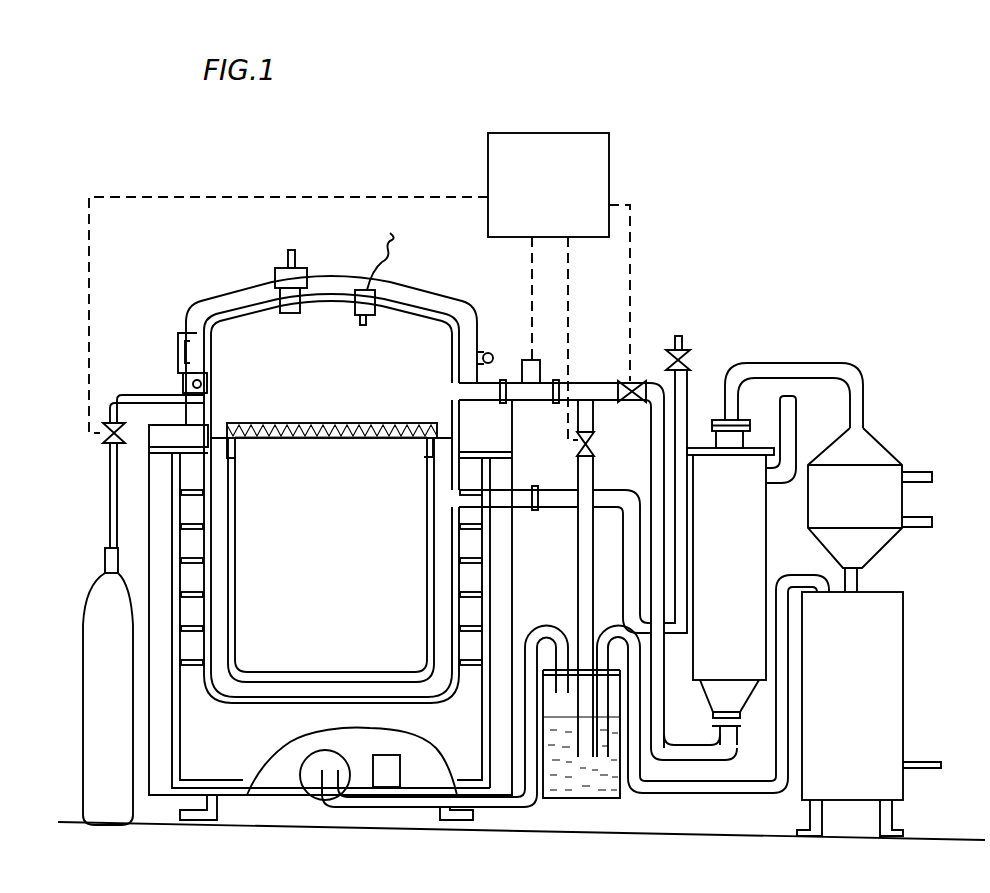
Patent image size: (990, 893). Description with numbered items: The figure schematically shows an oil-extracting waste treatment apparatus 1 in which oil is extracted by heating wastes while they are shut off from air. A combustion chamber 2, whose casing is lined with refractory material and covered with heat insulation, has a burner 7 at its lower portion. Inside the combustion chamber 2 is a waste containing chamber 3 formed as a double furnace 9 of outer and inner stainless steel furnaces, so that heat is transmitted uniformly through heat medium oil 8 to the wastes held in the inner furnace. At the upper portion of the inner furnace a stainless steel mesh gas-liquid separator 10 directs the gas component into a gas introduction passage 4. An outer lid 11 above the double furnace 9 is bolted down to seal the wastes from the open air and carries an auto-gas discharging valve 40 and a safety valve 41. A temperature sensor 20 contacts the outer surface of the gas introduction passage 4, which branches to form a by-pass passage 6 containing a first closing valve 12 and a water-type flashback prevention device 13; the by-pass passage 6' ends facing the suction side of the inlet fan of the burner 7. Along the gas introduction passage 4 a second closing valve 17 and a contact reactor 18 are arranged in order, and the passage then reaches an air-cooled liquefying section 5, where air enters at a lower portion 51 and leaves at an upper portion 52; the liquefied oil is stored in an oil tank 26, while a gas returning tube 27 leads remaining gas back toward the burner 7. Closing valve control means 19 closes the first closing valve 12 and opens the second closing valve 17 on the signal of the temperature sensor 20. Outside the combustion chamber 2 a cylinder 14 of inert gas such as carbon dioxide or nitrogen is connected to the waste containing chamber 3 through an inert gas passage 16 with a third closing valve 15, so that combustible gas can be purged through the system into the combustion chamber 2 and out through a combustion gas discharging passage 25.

The oil-extracting waste treatment apparatus 1 is at (709, 204).
The combustion chamber 2 is at (230, 760).
The waste containing chamber 3 is at (330, 546).
The gas introduction passage 4 is at (602, 382).
The liquefying section 5 is at (860, 440).
The by-pass passage 6 is at (560, 578).
The by-pass passage 6' is at (429, 765).
The burner 7 is at (310, 770).
The heat medium oil 8 is at (222, 608).
The double furnace 9 is at (235, 652).
The gas-liquid separator 10 is at (352, 423).
The outer lid 11 is at (410, 290).
The first closing valve 12 is at (596, 443).
The flashback prevention device 13 is at (593, 776).
The cylinder 14 is at (102, 618).
The third closing valve 15 is at (103, 440).
The inert gas passage 16 is at (145, 396).
The second closing valve 17 is at (635, 388).
The contact reactor 18 is at (735, 560).
The closing valve control means 19 is at (596, 165).
The temperature sensor 20 is at (528, 366).
The combustion gas discharging passage 25 is at (556, 497).
The oil tank 26 is at (878, 616).
The gas returning tube 27 is at (690, 790).
The auto-gas discharging valve 40 is at (365, 303).
The safety valve 41 is at (300, 280).
The lower portion 51 is at (922, 522).
The upper portion 52 is at (925, 477).